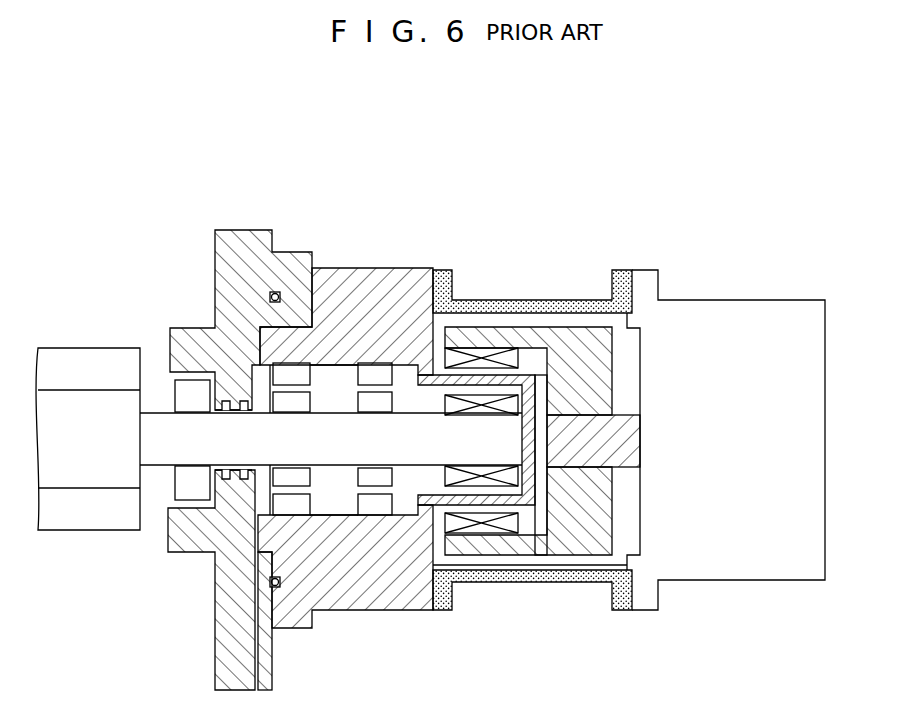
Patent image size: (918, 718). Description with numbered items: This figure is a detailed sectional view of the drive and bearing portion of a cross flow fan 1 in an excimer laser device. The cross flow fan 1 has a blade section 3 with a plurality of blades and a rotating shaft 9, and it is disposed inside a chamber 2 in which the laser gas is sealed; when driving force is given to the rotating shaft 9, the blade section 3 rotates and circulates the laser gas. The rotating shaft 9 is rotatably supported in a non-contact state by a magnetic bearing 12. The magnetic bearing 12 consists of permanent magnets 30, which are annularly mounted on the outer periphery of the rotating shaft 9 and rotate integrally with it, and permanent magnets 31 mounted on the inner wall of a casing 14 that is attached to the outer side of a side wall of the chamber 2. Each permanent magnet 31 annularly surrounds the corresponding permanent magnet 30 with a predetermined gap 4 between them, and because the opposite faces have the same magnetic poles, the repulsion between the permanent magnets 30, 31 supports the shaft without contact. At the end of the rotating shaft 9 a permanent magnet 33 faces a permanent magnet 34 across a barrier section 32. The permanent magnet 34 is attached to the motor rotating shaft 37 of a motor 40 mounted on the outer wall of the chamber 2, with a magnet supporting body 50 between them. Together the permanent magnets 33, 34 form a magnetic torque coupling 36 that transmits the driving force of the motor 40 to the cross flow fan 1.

The cross flow fan 1 is at (114, 313).
The chamber 2 is at (273, 238).
The blade section 3 is at (57, 360).
The gap 4 is at (273, 492).
The rotating shaft 9 is at (157, 464).
The magnetic bearing 12 is at (348, 368).
The casing 14 is at (412, 277).
The permanent magnet 30 is at (311, 403).
The permanent magnet 31 is at (311, 377).
The barrier section 32 is at (522, 375).
The permanent magnet 33 is at (483, 488).
The permanent magnet 34 is at (480, 352).
The magnetic torque coupling 36 is at (540, 516).
The motor rotating shaft 37 is at (620, 431).
The motor 40 is at (713, 312).
The magnet supporting body 50 is at (560, 335).